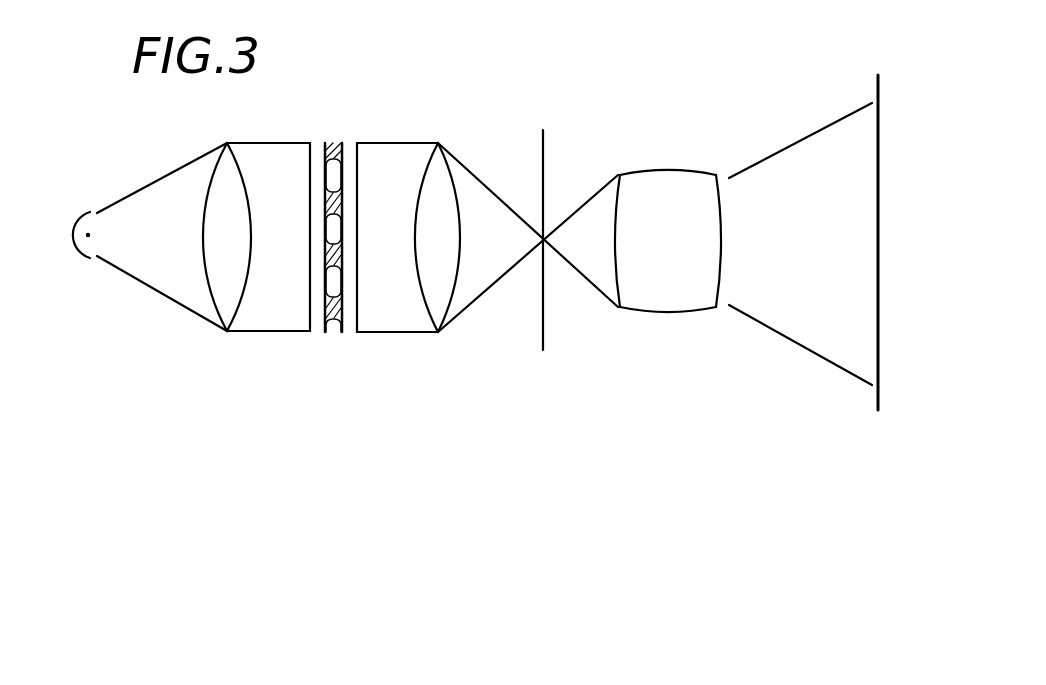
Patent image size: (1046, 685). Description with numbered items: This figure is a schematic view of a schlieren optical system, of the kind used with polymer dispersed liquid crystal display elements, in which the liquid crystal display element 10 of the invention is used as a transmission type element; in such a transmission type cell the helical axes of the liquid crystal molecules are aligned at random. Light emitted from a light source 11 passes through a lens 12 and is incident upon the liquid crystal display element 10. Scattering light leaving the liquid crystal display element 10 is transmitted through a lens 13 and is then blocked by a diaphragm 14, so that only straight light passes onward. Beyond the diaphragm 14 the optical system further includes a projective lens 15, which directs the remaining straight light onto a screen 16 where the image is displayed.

The liquid crystal display element 10 is at (333, 334).
The light source 11 is at (90, 212).
The lens 12 is at (224, 289).
The lens 13 is at (438, 292).
The diaphragm 14 is at (545, 322).
The projective lens 15 is at (685, 302).
The screen 16 is at (877, 398).